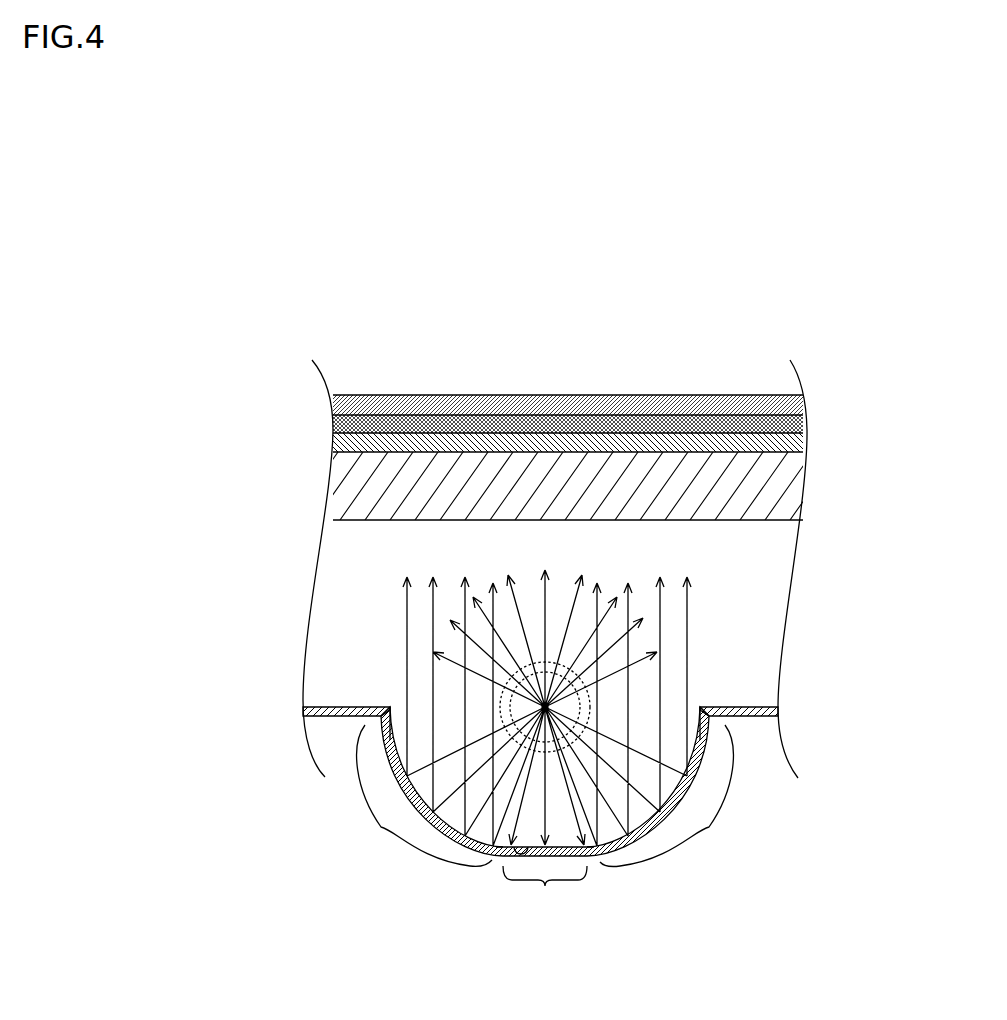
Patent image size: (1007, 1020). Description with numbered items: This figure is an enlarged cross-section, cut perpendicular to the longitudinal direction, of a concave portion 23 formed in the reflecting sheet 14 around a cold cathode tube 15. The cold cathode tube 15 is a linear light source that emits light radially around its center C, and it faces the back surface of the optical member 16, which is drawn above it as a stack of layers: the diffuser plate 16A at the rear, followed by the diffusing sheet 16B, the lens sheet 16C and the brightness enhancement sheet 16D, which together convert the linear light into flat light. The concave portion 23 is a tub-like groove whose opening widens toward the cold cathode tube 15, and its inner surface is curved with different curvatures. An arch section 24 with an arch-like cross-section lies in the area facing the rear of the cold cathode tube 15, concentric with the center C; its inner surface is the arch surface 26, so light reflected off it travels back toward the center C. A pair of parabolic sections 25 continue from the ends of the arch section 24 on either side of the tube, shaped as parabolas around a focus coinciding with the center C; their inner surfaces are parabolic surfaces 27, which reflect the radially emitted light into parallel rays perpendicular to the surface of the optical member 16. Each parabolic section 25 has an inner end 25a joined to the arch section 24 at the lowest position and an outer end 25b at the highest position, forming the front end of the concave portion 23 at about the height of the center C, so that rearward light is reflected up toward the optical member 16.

The reflecting sheet 14 is at (753, 705).
The cold cathode tube 15 is at (527, 665).
The optical member 16 is at (564, 352).
The diffuser plate 16A is at (743, 477).
The diffusing sheet 16B is at (713, 440).
The lens sheet 16C is at (667, 422).
The brightness enhancement sheet 16D is at (617, 410).
The concave portion 23 is at (539, 788).
The arch section 24 is at (545, 896).
The parabolic section 25 is at (553, 796).
The inner end 25a is at (503, 850).
The outer end 25b is at (386, 706).
The arch surface 26 is at (503, 852).
The parabolic surface 27 is at (395, 735).
The center C is at (547, 663).